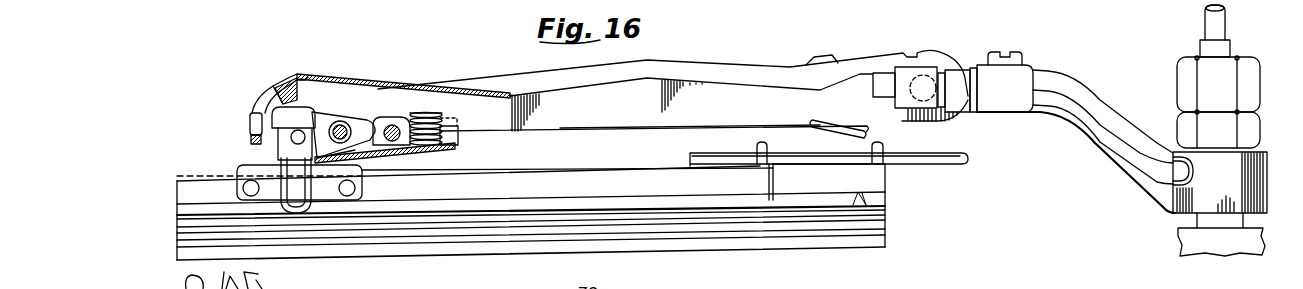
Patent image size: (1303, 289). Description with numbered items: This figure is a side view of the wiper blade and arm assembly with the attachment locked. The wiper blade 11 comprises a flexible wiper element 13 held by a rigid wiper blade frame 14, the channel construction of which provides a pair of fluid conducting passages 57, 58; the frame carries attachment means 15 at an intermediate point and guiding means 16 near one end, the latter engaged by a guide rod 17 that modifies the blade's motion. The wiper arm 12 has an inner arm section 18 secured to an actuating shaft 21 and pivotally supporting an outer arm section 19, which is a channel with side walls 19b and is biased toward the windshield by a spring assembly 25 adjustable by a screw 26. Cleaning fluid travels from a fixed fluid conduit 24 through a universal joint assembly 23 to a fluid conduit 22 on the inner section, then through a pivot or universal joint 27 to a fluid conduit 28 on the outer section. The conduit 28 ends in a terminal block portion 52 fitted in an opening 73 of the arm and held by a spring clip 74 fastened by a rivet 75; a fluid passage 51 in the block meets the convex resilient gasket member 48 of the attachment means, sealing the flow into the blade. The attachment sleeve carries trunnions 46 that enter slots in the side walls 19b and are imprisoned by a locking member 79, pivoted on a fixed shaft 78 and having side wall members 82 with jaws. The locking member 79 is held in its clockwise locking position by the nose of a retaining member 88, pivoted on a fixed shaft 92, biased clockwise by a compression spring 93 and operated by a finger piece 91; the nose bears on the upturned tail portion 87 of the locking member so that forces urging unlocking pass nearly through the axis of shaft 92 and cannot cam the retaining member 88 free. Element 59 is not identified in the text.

The wiper blade 11 is at (205, 173).
The wiper arm 12 is at (1039, 133).
The flexible wiper element 13 is at (885, 233).
The wiper blade frame 14 is at (657, 173).
The attachment means 15 is at (330, 210).
The guiding means 16 is at (880, 178).
The guide rod 17 is at (960, 165).
The inner arm section 18 is at (1118, 125).
The outer arm section 19 is at (540, 140).
The side walls 19b is at (727, 123).
The actuating shaft 21 is at (1240, 221).
The fluid conduit 22 is at (1070, 100).
The universal joint assembly 23 is at (1265, 89).
The fluid conduit 24 is at (1222, 20).
The spring assembly 25 is at (870, 118).
The screw 26 is at (832, 56).
The pivot or universal joint 27 is at (910, 100).
The fluid conduit 28 is at (705, 67).
The bearing pins or trunnions 46 is at (290, 139).
The resilient gasket member 48 is at (291, 76).
The fluid passage 51 is at (305, 79).
The terminal block portion 52 is at (297, 78).
The fluid conducting passage 57 is at (776, 157).
The fluid conducting passage 58 is at (388, 206).
The bracket flange 59 is at (484, 210).
The opening 73 is at (276, 91).
The spring clip 74 is at (280, 89).
The rivet 75 is at (251, 127).
The fixed shaft 78 is at (341, 128).
The locking member 79 is at (363, 152).
The side wall members 82 is at (360, 122).
The upturned tail portion 87 is at (391, 130).
The retaining member 88 is at (405, 152).
The finger piece 91 is at (460, 146).
The fixed shaft 92 is at (403, 115).
The compression spring 93 is at (425, 107).